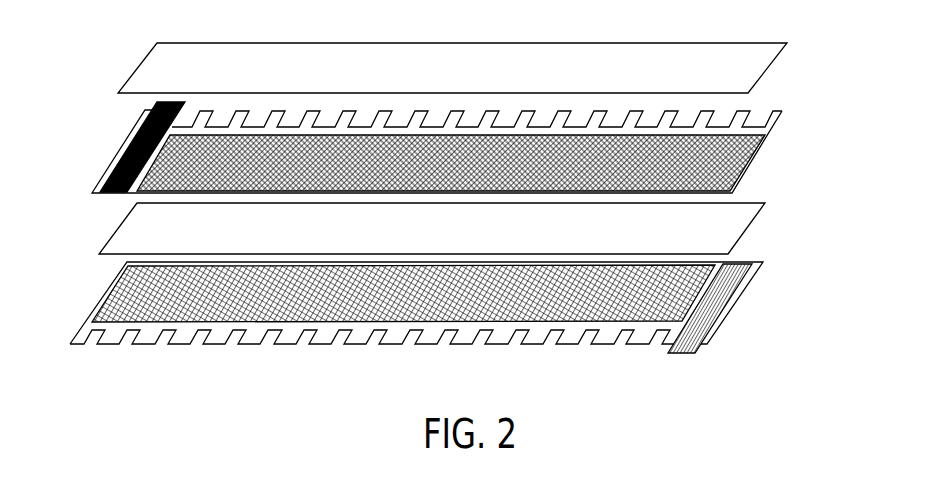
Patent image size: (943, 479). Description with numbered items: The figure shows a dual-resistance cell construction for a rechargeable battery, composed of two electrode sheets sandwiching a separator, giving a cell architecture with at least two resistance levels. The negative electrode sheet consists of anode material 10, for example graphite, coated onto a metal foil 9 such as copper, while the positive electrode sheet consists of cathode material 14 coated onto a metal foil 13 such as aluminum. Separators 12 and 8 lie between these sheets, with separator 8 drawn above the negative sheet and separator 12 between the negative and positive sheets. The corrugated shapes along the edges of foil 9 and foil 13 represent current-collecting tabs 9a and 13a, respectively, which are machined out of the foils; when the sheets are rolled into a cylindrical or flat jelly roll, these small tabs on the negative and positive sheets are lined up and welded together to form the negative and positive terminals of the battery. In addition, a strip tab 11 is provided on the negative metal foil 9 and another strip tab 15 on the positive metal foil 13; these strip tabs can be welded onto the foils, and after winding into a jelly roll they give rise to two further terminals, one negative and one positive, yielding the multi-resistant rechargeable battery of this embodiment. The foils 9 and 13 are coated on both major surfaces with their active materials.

The separator 8 is at (765, 72).
The copper foil 9 is at (452, 141).
The current-collecting tabs 9a is at (744, 112).
The anode material 10 is at (742, 163).
The strip tab 11 is at (127, 145).
The separator 12 is at (120, 222).
The aluminum foil 13 is at (408, 329).
The current-collecting tabs 13a is at (148, 347).
The cathode material 14 is at (120, 287).
The strip tab 15 is at (713, 312).